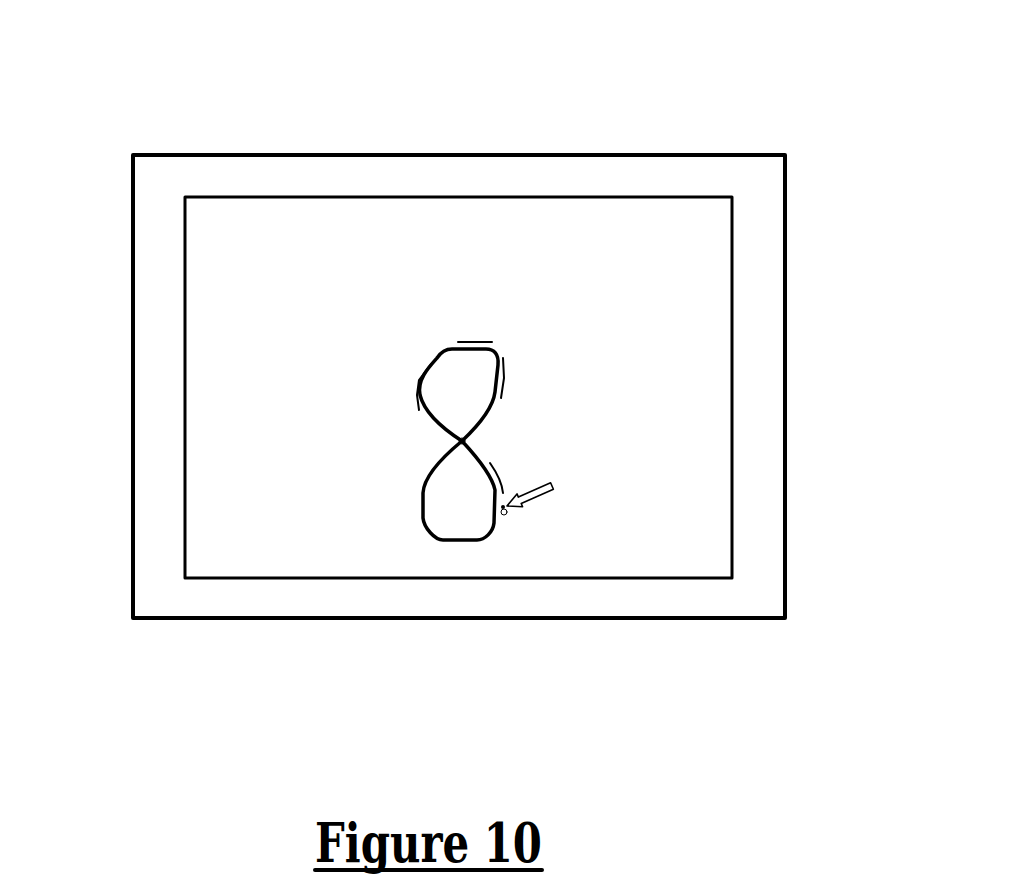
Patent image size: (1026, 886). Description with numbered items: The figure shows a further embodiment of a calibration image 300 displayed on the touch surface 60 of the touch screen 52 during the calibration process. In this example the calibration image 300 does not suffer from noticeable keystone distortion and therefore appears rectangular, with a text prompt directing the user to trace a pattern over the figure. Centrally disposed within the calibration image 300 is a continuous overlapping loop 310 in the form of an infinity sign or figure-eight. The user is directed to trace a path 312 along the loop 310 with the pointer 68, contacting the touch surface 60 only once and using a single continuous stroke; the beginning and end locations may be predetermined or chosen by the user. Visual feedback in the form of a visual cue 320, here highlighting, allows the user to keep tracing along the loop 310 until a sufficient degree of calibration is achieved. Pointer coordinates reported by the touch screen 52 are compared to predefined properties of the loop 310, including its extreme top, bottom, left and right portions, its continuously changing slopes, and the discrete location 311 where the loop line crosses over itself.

The touch screen 52 is at (165, 142).
The touch surface 60 is at (232, 176).
The calibration image 300 is at (620, 174).
The loop 310 is at (423, 517).
The discrete location 311 is at (462, 441).
The path 312 is at (500, 356).
The pointer 68 is at (540, 505).
The visual cue 320 is at (506, 519).